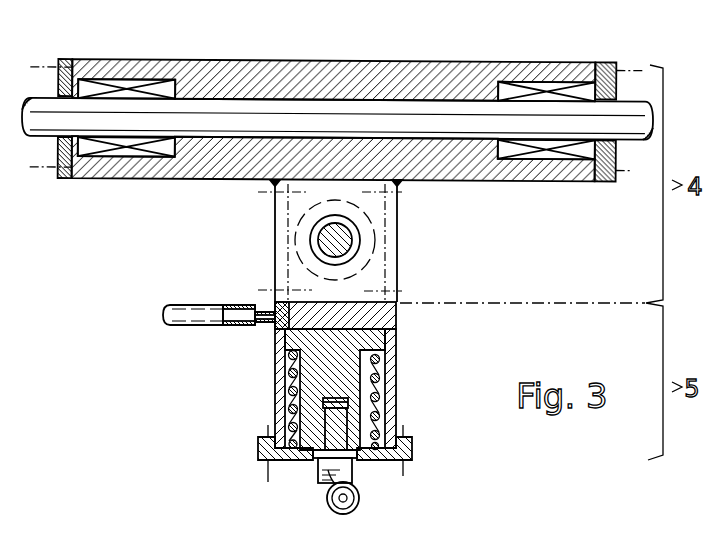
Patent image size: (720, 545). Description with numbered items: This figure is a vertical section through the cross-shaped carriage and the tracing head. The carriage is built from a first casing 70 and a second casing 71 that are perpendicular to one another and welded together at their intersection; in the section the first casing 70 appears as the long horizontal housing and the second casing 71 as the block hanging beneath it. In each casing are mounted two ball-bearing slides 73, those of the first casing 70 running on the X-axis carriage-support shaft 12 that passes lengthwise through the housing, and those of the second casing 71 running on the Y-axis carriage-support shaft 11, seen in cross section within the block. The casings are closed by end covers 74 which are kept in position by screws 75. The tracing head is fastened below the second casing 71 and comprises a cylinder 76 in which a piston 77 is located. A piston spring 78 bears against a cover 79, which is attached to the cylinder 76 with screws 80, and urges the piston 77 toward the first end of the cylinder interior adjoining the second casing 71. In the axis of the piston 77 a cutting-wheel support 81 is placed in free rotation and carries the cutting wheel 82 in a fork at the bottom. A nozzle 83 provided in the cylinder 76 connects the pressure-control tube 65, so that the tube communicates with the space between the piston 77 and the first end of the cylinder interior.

The Y-axis carriage-support shaft 11 is at (340, 239).
The X-axis carriage-support shaft 12 is at (302, 112).
The pressure-control tube 65 is at (192, 305).
The first casing 70 is at (229, 76).
The second casing 71 is at (252, 184).
The ball-bearing slides 73 is at (155, 88).
The end covers 74 is at (66, 62).
The screws 75 is at (40, 67).
The cylinder 76 is at (278, 387).
The piston 77 is at (397, 349).
The piston spring 78 is at (299, 412).
The cover 79 is at (264, 453).
The screws 80 is at (268, 471).
The cutting-wheel support 81 is at (332, 485).
The cutting wheel 82 is at (359, 503).
The nozzle 83 is at (270, 328).